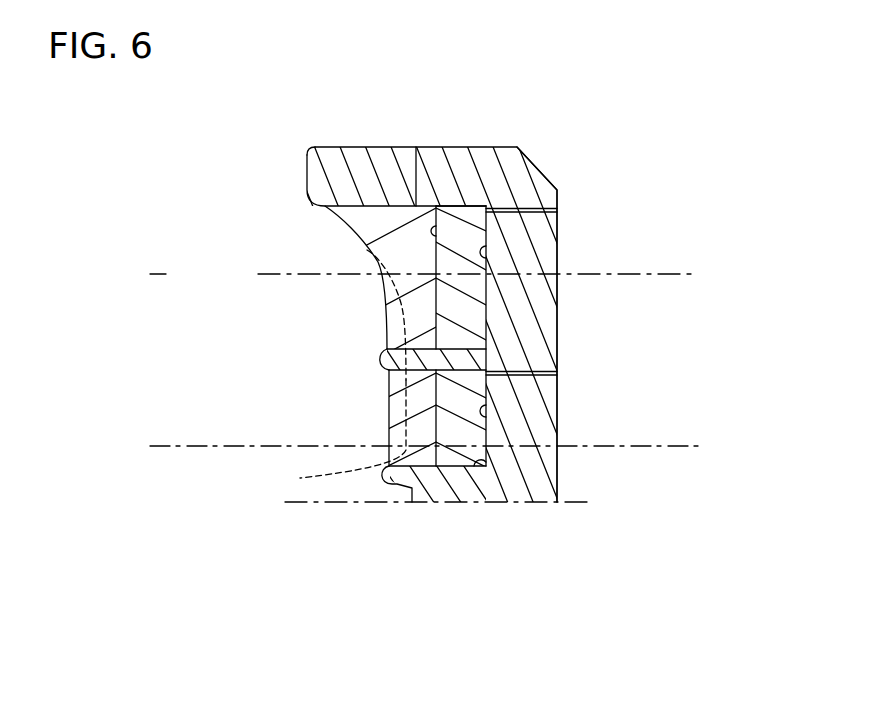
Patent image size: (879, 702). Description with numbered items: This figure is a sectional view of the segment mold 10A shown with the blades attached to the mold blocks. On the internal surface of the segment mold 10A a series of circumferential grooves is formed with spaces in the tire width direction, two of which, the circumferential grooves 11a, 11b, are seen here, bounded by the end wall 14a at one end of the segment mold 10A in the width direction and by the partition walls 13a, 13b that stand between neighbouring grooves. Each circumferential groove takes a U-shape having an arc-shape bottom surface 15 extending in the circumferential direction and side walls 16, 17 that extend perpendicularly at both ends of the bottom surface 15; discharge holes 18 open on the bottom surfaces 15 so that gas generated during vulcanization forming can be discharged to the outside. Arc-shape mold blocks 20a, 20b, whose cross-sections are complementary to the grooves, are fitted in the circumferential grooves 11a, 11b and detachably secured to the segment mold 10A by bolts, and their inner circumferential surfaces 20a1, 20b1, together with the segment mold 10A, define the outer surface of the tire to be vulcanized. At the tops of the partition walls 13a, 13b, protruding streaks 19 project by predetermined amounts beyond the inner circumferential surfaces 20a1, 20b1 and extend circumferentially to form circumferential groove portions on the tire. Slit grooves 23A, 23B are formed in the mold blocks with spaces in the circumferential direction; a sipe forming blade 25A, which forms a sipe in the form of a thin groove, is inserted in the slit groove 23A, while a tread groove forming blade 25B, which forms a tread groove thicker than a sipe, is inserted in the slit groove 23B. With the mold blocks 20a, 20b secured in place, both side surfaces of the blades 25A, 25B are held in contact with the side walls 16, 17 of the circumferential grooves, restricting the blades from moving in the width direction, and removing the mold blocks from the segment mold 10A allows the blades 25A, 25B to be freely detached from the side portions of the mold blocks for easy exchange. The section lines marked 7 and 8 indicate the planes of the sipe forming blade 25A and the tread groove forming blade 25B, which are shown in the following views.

The segment mold 10A is at (556, 138).
The end wall 14a is at (343, 147).
The side wall 16 is at (417, 147).
The discharge hole 18 is at (547, 178).
The mold block 20a is at (460, 223).
The inner circumferential surface 20a1 is at (367, 250).
The mold block 20b is at (462, 466).
The inner circumferential surface 20b1 is at (300, 478).
The slit groove 23A is at (487, 230).
The slit groove 23B is at (487, 390).
The sipe forming blade 25A is at (335, 220).
The tread groove forming blade 25B is at (395, 398).
The bottom surface 15 is at (488, 256).
The side wall 17 is at (488, 330).
The circumferential groove 11a is at (484, 291).
The circumferential groove 11b is at (484, 430).
The partition wall 13a is at (398, 346).
The partition wall 13b is at (438, 495).
The protruding streak 19 is at (384, 358).
The section line 7- 7 is at (147, 275).
The section line 8- 8 is at (147, 446).